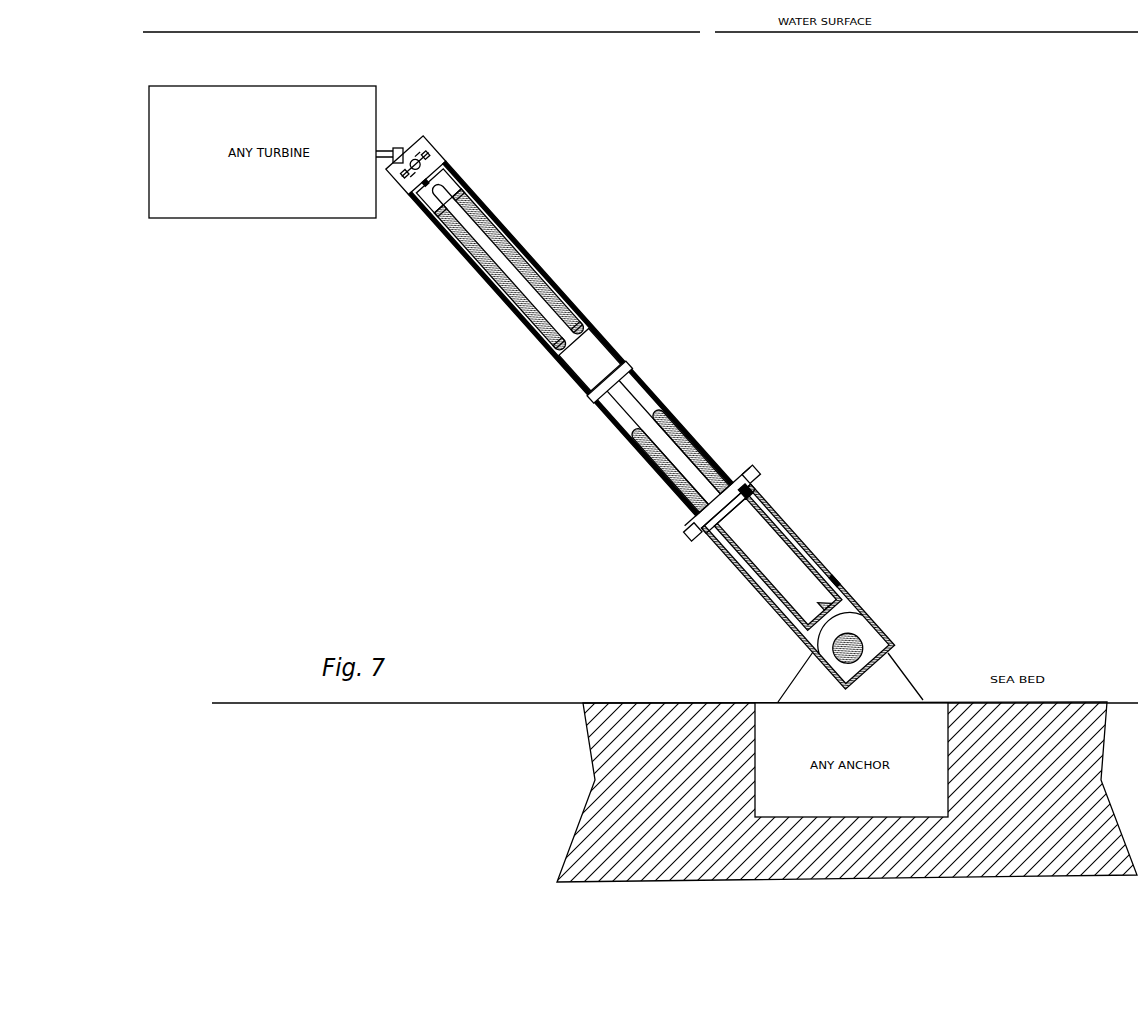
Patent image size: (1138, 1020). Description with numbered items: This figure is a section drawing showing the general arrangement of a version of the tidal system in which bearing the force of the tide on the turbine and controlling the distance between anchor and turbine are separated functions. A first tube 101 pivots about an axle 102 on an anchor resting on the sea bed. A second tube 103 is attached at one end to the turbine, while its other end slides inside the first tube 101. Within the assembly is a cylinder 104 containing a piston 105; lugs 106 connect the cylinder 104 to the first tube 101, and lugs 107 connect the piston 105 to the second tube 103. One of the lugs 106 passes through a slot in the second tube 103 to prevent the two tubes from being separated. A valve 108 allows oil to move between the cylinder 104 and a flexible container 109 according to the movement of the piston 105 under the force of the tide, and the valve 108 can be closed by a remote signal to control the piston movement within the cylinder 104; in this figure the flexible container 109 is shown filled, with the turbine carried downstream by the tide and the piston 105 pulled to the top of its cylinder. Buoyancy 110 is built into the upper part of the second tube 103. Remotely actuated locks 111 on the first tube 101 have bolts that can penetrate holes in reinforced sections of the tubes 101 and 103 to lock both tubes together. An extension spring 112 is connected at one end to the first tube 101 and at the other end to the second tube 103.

The first tube 101 is at (795, 537).
The axle 102 is at (858, 650).
The second tube 103 is at (578, 305).
The cylinder 104 is at (760, 573).
The piston 105 is at (592, 355).
The lugs 106 is at (752, 488).
The lugs 107 is at (437, 215).
The valve 108 is at (735, 470).
The flexible container 109 is at (667, 403).
The buoyancy 110 is at (488, 263).
The remotely actuated locks 111 is at (753, 472).
The extension spring 112 is at (630, 365).